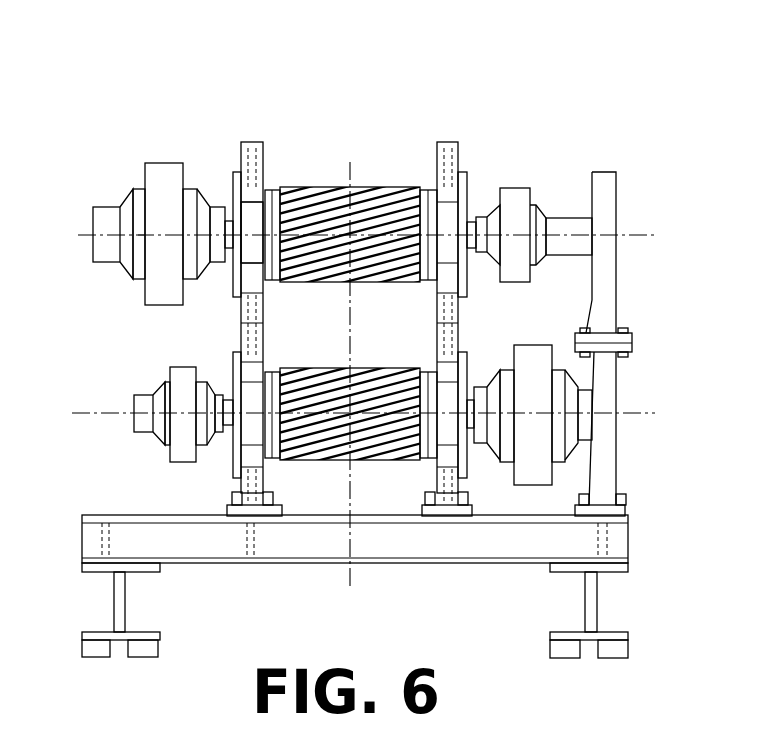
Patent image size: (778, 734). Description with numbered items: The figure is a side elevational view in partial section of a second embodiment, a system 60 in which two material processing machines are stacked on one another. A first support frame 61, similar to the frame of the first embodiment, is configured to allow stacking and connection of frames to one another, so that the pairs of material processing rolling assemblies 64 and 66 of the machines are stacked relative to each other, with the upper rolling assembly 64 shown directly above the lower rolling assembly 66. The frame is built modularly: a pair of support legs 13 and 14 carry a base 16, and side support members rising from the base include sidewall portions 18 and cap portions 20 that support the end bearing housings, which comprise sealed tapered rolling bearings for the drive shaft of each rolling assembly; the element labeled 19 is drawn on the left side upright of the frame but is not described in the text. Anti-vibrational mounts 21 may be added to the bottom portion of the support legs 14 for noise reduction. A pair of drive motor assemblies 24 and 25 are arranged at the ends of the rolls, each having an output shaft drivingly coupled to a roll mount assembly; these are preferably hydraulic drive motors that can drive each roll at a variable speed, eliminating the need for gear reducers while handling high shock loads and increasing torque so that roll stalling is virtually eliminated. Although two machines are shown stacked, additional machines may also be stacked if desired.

The system 60 is at (218, 115).
The first support frame 61 is at (243, 212).
The material processing rolling assembly 64 is at (385, 187).
The material processing rolling assembly 66 is at (385, 368).
The left roll housing 19 is at (243, 330).
The cap portions 20 is at (460, 336).
The sidewall portions 18 is at (447, 463).
The drive motor assembly 24 is at (165, 380).
The drive motor assembly 25 is at (545, 392).
The base 16 is at (628, 550).
The support leg 13 is at (114, 603).
The support leg 14 is at (597, 612).
The anti-vibrational mounts 21 is at (628, 650).